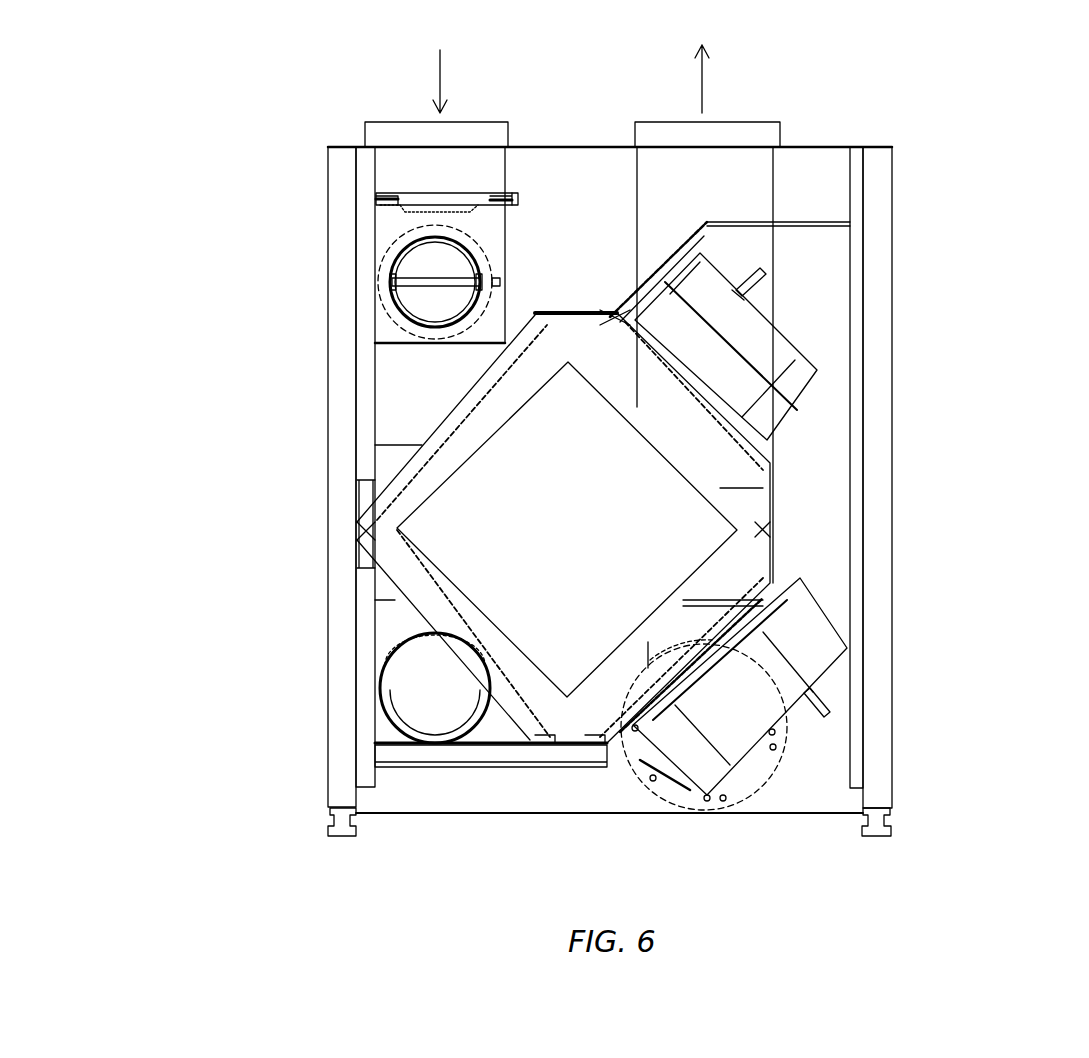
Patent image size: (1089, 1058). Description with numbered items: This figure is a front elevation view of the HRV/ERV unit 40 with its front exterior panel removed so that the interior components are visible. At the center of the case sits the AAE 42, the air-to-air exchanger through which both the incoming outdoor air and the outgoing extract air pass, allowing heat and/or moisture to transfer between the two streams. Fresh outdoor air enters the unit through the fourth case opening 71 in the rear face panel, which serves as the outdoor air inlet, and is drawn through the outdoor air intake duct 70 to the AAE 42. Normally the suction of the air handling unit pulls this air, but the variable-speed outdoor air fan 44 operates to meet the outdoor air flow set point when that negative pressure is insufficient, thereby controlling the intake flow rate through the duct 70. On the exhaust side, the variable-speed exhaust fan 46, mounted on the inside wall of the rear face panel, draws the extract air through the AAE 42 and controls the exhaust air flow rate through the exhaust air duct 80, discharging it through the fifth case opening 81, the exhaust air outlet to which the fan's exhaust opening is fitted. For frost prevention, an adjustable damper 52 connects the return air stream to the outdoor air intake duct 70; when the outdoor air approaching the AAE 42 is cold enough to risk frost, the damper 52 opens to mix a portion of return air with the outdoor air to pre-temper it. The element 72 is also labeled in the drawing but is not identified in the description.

The HRV/ERV unit 40 is at (953, 185).
The AAE 42 is at (578, 650).
The variable-speed outdoor air fan 44 is at (805, 383).
The variable-speed exhaust fan 46 is at (813, 655).
The adjustable damper 52 is at (420, 270).
The outdoor air intake duct 70 is at (400, 165).
The fourth case opening 71 is at (412, 687).
The damper 72 is at (377, 200).
The exhaust air duct 80 is at (745, 175).
The fifth case opening 81 is at (783, 752).